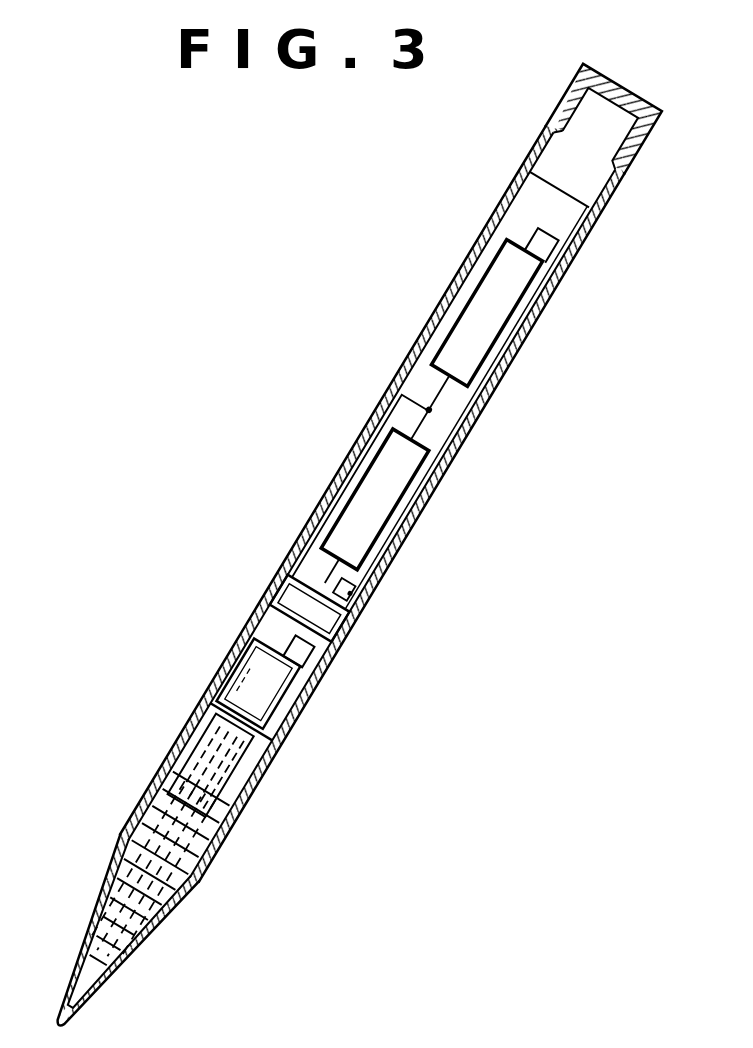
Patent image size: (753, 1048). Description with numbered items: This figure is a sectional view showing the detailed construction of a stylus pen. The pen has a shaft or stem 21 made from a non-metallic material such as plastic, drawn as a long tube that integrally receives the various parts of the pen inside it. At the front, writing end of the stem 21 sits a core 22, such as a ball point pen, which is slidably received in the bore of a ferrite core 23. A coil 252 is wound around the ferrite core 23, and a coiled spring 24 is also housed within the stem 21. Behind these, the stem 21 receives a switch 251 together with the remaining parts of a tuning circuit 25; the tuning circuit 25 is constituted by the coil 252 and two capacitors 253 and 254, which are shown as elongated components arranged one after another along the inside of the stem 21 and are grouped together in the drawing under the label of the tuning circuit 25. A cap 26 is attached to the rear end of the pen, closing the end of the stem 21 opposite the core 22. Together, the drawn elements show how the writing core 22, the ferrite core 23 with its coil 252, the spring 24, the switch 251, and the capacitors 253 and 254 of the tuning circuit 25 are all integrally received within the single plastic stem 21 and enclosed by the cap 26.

The stem 21 is at (363, 440).
The core 22 is at (87, 935).
The ferrite core 23 is at (172, 852).
The coiled spring 24 is at (226, 663).
The tuning circuit 25 is at (393, 568).
The switch 251 is at (347, 653).
The coil 252 is at (237, 840).
The capacitor 253 is at (472, 337).
The capacitor 254 is at (395, 483).
The cap 26 is at (614, 86).